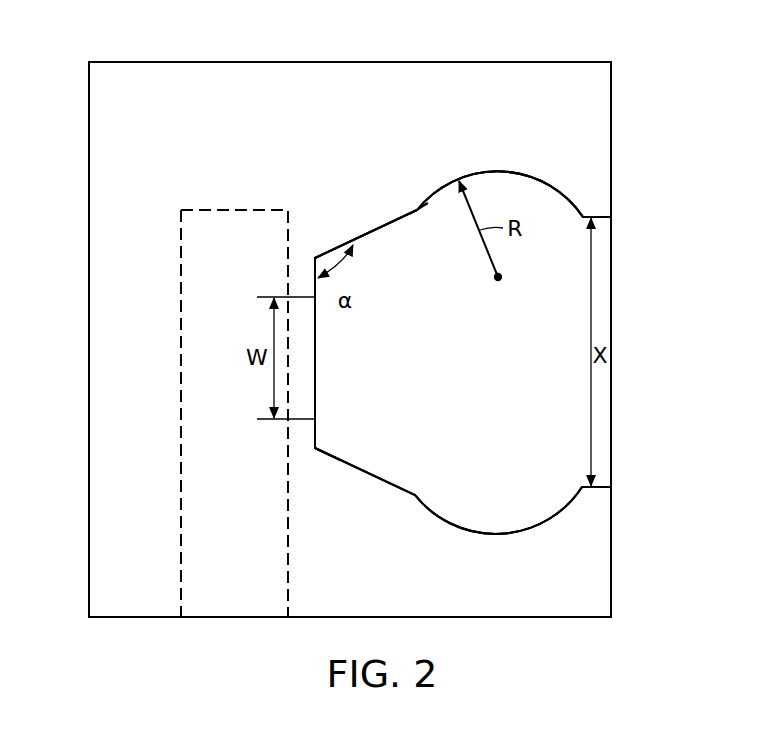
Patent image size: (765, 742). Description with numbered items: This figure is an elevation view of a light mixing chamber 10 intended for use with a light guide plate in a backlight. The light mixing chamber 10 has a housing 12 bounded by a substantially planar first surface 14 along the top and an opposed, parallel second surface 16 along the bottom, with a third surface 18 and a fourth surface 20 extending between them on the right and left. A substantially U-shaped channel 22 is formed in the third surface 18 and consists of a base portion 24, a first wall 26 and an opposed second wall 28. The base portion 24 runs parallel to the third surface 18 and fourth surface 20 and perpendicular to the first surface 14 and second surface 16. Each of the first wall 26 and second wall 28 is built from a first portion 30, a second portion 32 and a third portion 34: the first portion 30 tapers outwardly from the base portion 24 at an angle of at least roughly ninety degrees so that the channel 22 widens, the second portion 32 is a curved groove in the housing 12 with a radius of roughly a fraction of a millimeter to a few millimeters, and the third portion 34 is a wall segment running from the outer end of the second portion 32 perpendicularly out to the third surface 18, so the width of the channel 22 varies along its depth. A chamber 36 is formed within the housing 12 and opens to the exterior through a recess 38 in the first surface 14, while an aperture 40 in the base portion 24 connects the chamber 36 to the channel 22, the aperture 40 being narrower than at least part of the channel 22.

The light mixing chamber 10 is at (670, 141).
The housing 12 is at (185, 140).
The first surface 14 is at (543, 617).
The second surface 16 is at (352, 62).
The third surface 18 is at (612, 555).
The fourth surface 20 is at (89, 492).
The channel 22 is at (472, 360).
The base portion 24 is at (318, 378).
The first wall 26 is at (420, 215).
The second wall 28 is at (418, 492).
The first portion 30 is at (385, 226).
The second portion 32 is at (565, 200).
The third portion 34 is at (602, 218).
The chamber 36 is at (209, 325).
The recess 38 is at (181, 615).
The aperture 40 is at (311, 421).